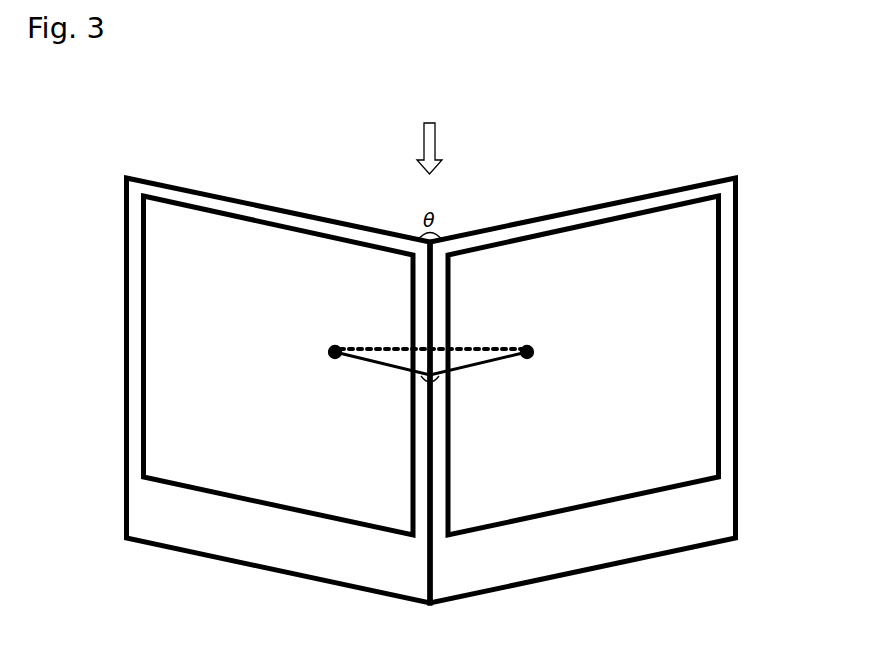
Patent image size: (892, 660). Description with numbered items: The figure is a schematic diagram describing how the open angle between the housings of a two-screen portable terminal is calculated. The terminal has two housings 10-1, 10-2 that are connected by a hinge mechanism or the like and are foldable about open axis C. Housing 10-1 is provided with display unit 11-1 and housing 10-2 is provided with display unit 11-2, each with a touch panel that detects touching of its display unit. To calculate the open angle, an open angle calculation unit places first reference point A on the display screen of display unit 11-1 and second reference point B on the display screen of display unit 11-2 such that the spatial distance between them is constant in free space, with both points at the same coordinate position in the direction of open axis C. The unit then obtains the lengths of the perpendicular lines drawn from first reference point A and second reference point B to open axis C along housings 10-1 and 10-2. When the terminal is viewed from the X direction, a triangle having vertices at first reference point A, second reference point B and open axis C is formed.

The housing 10-1 is at (640, 198).
The housing 10-2 is at (223, 196).
The display unit 11-1 is at (722, 320).
The display unit 11-2 is at (140, 320).
The open axis C is at (433, 578).
The first reference point A is at (539, 346).
The second reference point B is at (324, 346).
The X direction X is at (429, 133).